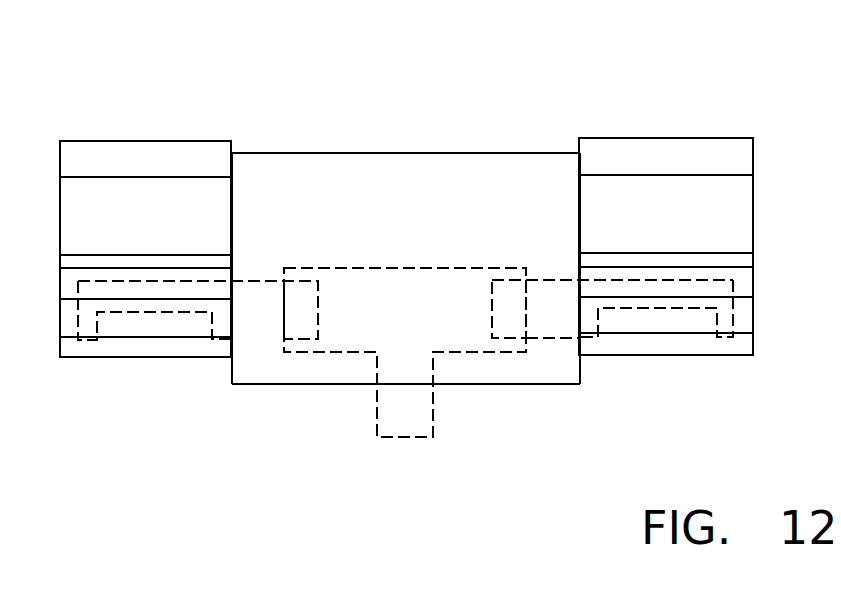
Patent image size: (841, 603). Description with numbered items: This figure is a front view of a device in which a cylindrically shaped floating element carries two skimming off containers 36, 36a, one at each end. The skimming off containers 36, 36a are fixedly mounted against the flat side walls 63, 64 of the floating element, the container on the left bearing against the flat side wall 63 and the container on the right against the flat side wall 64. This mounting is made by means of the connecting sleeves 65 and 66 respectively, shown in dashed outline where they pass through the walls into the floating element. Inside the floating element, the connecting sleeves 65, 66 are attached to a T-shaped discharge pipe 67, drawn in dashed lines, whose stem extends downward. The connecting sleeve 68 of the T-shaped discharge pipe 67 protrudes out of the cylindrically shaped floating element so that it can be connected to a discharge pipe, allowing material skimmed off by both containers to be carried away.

The skimming off container 36 is at (118, 158).
The skimming off container 36a is at (738, 159).
The flat side wall 63 is at (232, 237).
The flat side wall 64 is at (580, 227).
The connecting sleeve 65 is at (268, 313).
The connecting sleeve 66 is at (553, 328).
The T-shaped discharge pipe 67 is at (478, 293).
The connecting sleeve 68 is at (422, 417).